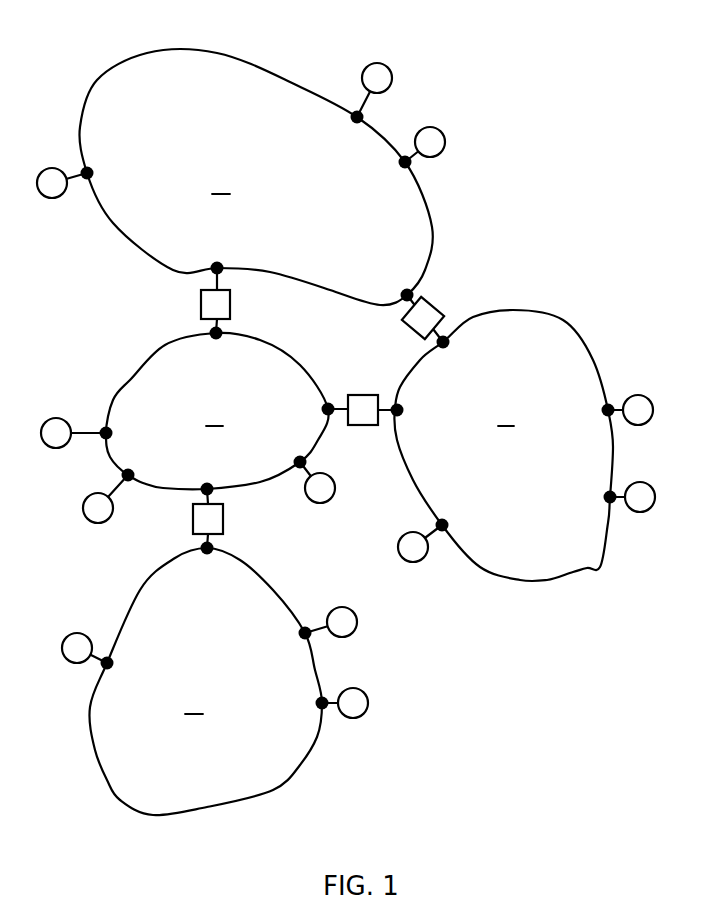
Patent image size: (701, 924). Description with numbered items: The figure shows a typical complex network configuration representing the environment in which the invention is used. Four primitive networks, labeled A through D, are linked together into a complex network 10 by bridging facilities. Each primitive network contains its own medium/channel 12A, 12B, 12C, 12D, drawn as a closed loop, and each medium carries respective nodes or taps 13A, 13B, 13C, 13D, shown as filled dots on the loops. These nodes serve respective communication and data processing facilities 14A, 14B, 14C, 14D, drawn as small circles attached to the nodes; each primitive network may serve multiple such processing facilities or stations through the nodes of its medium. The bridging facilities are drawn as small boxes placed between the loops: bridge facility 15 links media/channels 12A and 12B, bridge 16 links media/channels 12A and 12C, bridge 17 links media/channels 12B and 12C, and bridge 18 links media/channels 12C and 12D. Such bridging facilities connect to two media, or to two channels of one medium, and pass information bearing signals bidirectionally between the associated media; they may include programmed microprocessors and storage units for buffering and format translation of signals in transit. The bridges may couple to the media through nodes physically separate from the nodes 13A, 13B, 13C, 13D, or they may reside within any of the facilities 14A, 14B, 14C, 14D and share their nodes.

The complex network 10 is at (504, 228).
The medium/channel 12A is at (216, 53).
The medium/channel 12B is at (543, 582).
The medium/channel 12C is at (165, 495).
The medium/channel 12D is at (95, 750).
The nodes or taps 13A is at (404, 163).
The nodes or taps 13B is at (609, 407).
The nodes or taps 13C is at (110, 430).
The nodes or taps 13D is at (302, 632).
The communication and data processing facilities 14A is at (392, 78).
The communication and data processing facilities 14B is at (643, 423).
The communication and data processing facilities 14C is at (93, 496).
The communication and data processing facilities 14D is at (350, 637).
The bridge facility 15 is at (428, 298).
The bridge 16 is at (200, 302).
The bridge 17 is at (368, 395).
The bridge 18 is at (224, 516).